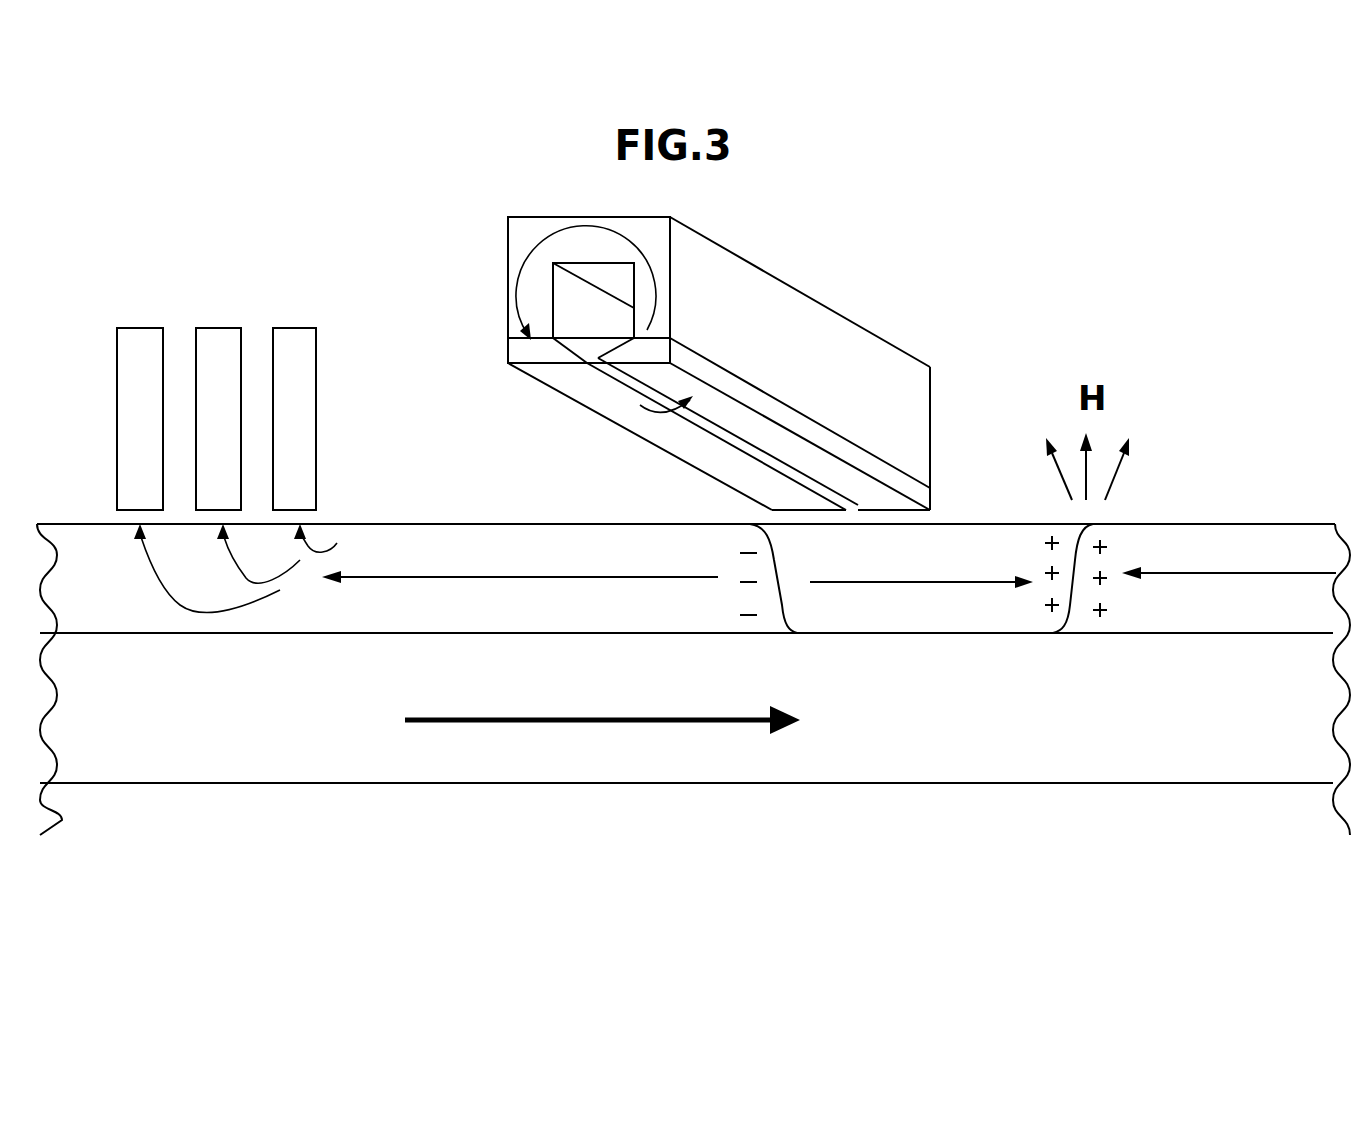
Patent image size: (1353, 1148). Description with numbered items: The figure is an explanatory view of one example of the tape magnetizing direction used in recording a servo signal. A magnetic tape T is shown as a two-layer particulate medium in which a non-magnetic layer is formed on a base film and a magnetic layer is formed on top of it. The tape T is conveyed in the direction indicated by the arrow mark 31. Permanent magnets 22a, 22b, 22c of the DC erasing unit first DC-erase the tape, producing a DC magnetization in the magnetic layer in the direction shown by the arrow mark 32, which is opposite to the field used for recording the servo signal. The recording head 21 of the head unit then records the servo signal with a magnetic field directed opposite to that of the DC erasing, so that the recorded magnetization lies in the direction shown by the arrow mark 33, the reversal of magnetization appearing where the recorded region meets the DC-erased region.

The recording head 21 is at (816, 270).
The permanent magnet 22a is at (137, 337).
The permanent magnet 22b is at (214, 337).
The permanent magnet 22c is at (292, 337).
The arrow mark 31 is at (580, 723).
The arrow mark 32 is at (515, 576).
The arrow mark 33 is at (993, 576).
The magnetic tape T is at (447, 508).